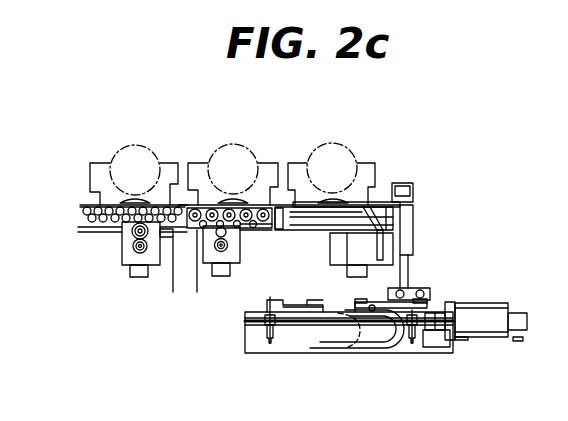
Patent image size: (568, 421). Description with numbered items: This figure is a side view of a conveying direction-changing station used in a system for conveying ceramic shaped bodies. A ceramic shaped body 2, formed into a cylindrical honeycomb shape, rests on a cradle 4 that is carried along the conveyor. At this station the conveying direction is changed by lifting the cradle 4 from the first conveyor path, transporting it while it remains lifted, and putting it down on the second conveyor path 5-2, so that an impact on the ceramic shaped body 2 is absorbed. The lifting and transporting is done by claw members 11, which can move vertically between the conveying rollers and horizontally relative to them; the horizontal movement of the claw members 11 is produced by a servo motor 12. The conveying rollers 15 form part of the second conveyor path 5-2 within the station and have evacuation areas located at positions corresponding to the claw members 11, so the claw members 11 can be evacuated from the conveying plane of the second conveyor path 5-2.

The ceramic shaped body 2 is at (329, 143).
The cradle 4 is at (366, 162).
The second conveyor path 5-2 is at (104, 241).
The claw member 11 is at (399, 216).
The servo motor 12 is at (478, 302).
The conveying rollers 15 is at (199, 210).